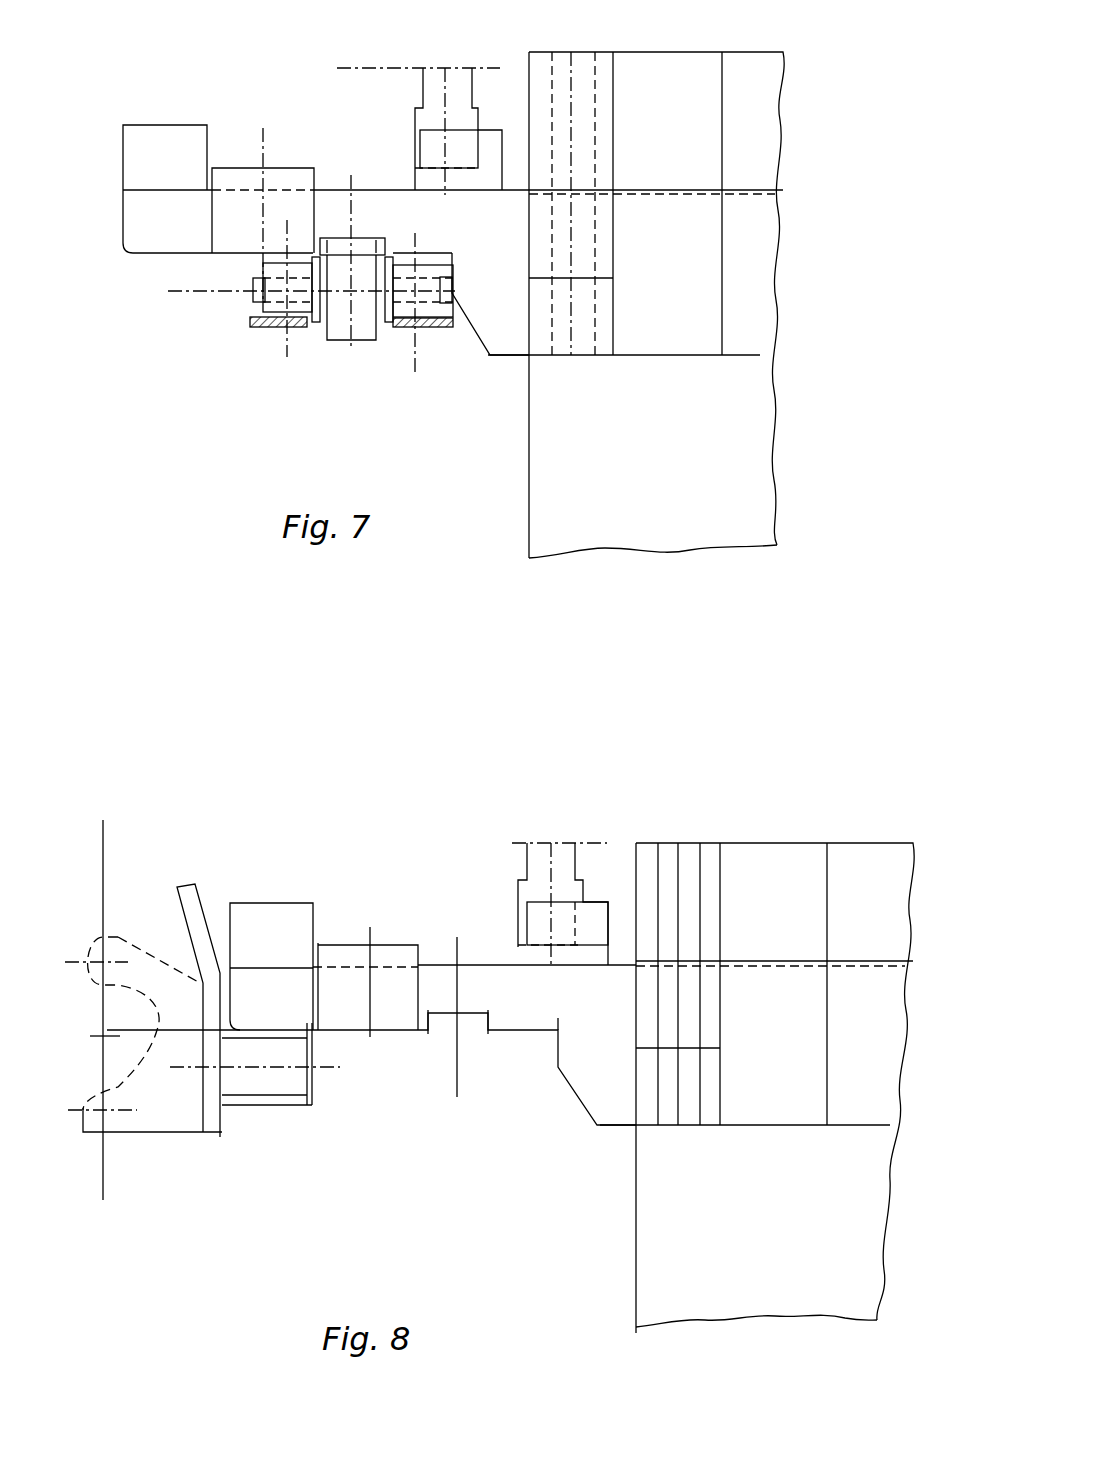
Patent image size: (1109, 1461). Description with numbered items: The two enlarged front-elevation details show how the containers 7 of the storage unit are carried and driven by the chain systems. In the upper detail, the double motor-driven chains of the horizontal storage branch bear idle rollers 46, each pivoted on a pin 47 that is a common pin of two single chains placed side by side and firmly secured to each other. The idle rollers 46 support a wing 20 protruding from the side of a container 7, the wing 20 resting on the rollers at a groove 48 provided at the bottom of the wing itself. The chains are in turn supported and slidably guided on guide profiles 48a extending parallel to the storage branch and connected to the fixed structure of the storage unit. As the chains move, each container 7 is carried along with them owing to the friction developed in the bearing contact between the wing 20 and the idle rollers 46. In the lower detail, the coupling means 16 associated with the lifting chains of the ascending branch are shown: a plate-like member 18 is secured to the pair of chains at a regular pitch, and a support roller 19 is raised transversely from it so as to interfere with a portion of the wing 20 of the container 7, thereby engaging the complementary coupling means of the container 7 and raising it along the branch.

In FIG. 7, the container 7 is at (519, 422).
In FIG. 8, the container 7 is at (628, 1188).
In FIG. 8, the coupling means 16 is at (123, 1165).
In FIG. 8, the plate-like member 18 is at (213, 1133).
In FIG. 8, the support roller 19 is at (287, 1087).
In FIG. 7, the wing 20 is at (328, 203).
In FIG. 8, the wing 20 is at (443, 983).
In FIG. 7, the idle roller 46 is at (337, 337).
In FIG. 7, the pin 47 is at (253, 297).
In FIG. 7, the groove 48 is at (353, 248).
In FIG. 8, the groove 48 is at (430, 1020).
In FIG. 7, the guide profile 48a is at (265, 327).